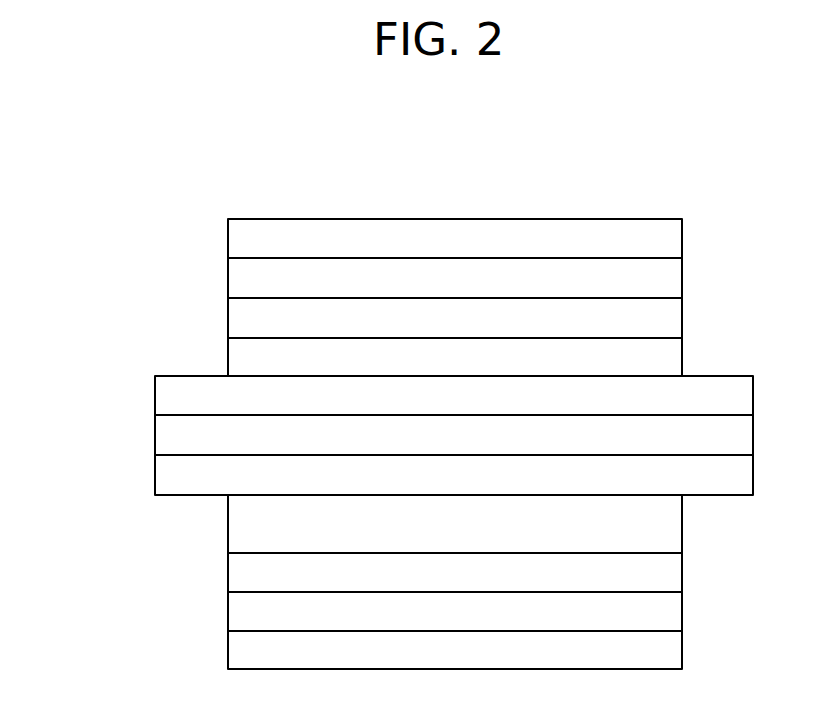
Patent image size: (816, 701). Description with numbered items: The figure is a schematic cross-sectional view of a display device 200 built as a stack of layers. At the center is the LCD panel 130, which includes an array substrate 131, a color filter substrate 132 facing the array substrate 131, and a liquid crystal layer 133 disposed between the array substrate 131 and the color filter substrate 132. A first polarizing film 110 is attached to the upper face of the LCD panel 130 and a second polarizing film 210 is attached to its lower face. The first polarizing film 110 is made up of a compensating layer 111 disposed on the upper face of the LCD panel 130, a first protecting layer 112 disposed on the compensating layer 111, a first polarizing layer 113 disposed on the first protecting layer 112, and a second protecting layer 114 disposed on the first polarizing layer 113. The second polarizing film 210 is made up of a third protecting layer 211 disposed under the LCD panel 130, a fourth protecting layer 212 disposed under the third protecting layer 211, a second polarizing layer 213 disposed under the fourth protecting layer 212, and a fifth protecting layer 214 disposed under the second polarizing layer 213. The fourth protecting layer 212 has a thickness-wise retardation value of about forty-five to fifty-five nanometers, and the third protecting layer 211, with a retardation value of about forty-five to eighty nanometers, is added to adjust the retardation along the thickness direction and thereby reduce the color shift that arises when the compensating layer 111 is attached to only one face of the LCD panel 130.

The display device 200 is at (538, 203).
The first polarizing film 110 is at (145, 222).
The compensating layer 111 is at (240, 353).
The first protecting layer 112 is at (240, 315).
The first polarizing layer 113 is at (240, 275).
The second protecting layer 114 is at (240, 236).
The LCD panel 130 is at (75, 375).
The array substrate 131 is at (167, 471).
The color filter substrate 132 is at (167, 393).
The liquid crystal layer 133 is at (167, 432).
The second polarizing film 210 is at (145, 505).
The third protecting layer 211 is at (240, 521).
The fourth protecting layer 212 is at (240, 571).
The second polarizing layer 213 is at (240, 609).
The fifth protecting layer 214 is at (240, 646).